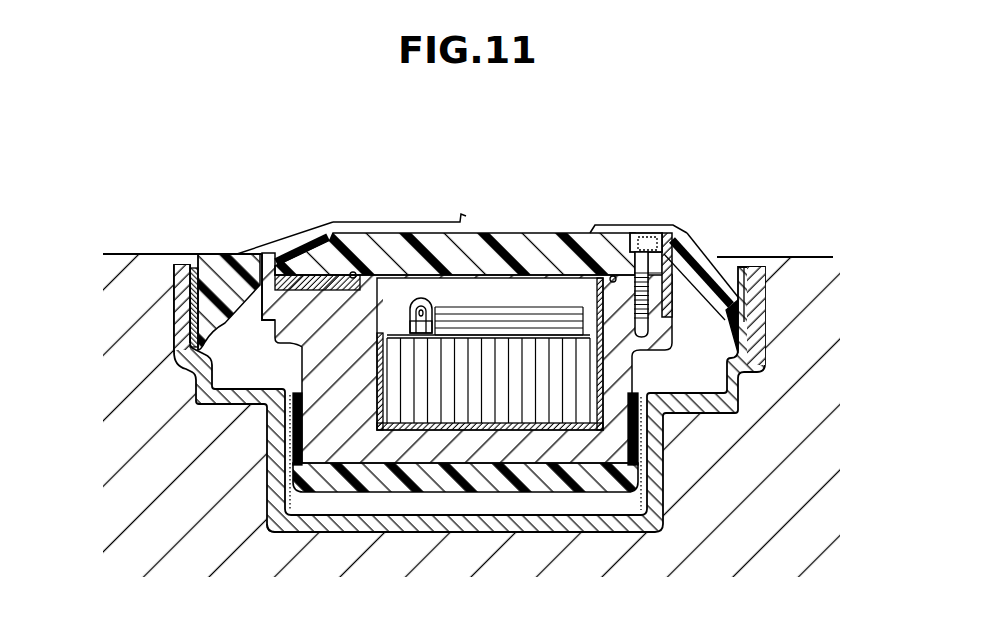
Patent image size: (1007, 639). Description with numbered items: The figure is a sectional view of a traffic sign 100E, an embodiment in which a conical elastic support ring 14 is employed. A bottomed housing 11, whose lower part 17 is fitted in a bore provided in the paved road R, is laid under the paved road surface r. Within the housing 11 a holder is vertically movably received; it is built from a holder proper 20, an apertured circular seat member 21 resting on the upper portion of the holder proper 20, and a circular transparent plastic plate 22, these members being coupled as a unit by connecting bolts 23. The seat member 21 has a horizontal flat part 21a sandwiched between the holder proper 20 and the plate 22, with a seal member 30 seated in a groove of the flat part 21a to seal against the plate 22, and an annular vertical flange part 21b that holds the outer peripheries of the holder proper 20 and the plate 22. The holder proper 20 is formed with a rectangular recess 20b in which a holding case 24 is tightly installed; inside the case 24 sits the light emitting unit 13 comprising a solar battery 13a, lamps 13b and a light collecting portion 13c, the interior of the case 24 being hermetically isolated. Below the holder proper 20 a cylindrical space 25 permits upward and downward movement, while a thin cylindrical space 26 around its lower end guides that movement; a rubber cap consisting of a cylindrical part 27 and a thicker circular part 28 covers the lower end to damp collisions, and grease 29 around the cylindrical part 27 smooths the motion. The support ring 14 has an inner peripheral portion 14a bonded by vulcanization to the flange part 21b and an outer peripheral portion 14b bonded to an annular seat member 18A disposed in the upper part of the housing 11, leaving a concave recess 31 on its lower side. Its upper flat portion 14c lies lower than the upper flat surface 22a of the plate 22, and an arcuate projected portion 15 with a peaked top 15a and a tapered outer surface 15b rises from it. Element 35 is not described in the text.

The traffic sign 100E is at (676, 85).
The housing 11 is at (675, 440).
The paved road R is at (807, 287).
The paved road surface r is at (778, 257).
The annular seat member 18A is at (160, 256).
The holder proper 20 is at (647, 369).
The rectangular recess 20b is at (265, 525).
The case rim 35 is at (215, 346).
The cylindrical part 27 is at (258, 411).
The concave recess 31 is at (205, 373).
The grease 29 is at (285, 463).
The cylindrical space 25 is at (340, 503).
The circular lower part 17 is at (650, 498).
The elastic support ring 14 is at (197, 264).
The inner peripheral portion 14a is at (218, 274).
The outer peripheral portion 14b is at (206, 305).
The upper flat portion 14c is at (213, 272).
The holding case 24 is at (405, 440).
The apertured circular seat member 21 is at (266, 262).
The horizontal flat part 21a is at (323, 282).
The annular vertical flange part 21b is at (253, 262).
The seal member 30 is at (392, 222).
The transparent plastic plate 22 is at (472, 246).
The upper flat surface 22a is at (504, 296).
The light emitting unit 13 is at (520, 276).
The solar battery 13a is at (448, 422).
The lamps 13b is at (421, 304).
The light collecting portion 13c is at (541, 310).
The circular part 28 is at (537, 480).
The thin cylindrical space 26 is at (637, 505).
The arcuate projected portion 15 is at (690, 250).
The top 15a is at (660, 235).
The tapered outer surface 15b is at (713, 247).
The connecting bolts 23 is at (640, 232).